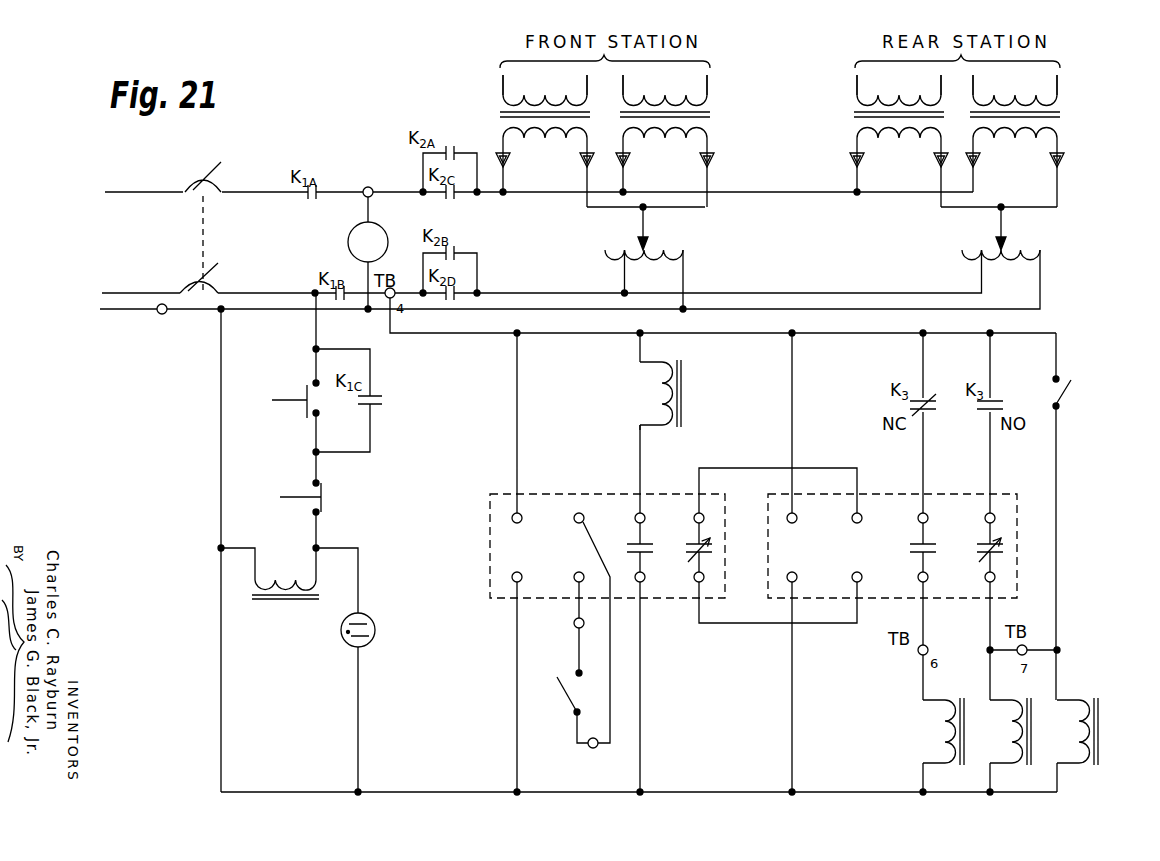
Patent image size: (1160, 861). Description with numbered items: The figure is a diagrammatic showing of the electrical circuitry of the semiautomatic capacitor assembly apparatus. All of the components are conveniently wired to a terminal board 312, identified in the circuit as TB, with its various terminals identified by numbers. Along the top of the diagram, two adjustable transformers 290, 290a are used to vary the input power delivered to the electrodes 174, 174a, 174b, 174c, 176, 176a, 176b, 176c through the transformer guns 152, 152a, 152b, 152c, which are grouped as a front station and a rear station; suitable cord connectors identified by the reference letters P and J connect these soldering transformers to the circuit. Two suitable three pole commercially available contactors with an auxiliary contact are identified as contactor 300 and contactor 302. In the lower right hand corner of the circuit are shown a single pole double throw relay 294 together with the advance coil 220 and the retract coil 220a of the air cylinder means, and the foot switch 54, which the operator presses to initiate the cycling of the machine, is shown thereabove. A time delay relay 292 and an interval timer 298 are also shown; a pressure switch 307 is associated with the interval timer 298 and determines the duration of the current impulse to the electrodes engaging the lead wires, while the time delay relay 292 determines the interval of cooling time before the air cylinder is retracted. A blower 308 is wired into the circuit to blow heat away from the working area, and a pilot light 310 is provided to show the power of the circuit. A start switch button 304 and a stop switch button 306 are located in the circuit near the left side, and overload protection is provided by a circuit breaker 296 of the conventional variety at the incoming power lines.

The terminal board 312 is at (150, 306).
The circuit breaker 296 is at (236, 248).
The blower 308 is at (342, 240).
The start switch button 304 is at (296, 410).
The stop switch button 306 is at (296, 510).
The contactor 300 is at (288, 608).
The pilot light 310 is at (374, 613).
The interval timer 298 is at (541, 506).
The contactor 302 is at (697, 392).
The time delay relay 292 is at (755, 630).
The pressure switch 307 is at (558, 714).
The foot switch 54 is at (1075, 368).
The advance coil 220 is at (923, 726).
The retract coil 220a is at (1102, 727).
The single pole double throw relay 294 is at (1032, 770).
The adjustable transformer 290 is at (1047, 243).
The adjustable transformer 290a is at (692, 243).
The transformer gun 152 is at (1067, 124).
The transformer gun 152a is at (845, 115).
The transformer gun 152b is at (493, 140).
The transformer gun 152c is at (746, 128).
The electrode 174 is at (1057, 88).
The electrode 174a is at (941, 92).
The electrode 174b is at (590, 92).
The electrode 174c is at (708, 88).
The electrode 176 is at (974, 92).
The electrode 176a is at (856, 90).
The electrode 176b is at (500, 88).
The electrode 176c is at (630, 84).